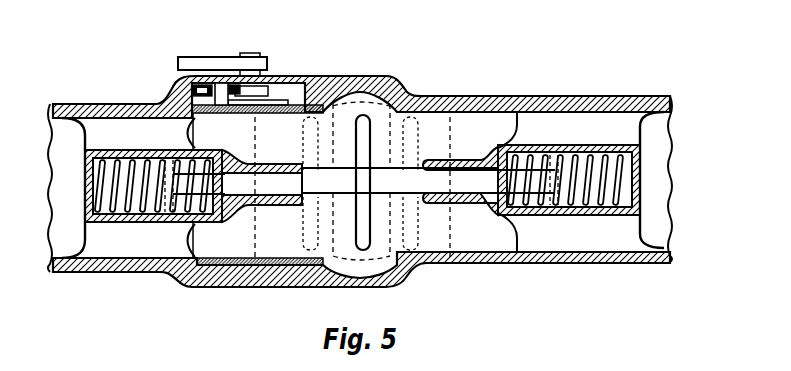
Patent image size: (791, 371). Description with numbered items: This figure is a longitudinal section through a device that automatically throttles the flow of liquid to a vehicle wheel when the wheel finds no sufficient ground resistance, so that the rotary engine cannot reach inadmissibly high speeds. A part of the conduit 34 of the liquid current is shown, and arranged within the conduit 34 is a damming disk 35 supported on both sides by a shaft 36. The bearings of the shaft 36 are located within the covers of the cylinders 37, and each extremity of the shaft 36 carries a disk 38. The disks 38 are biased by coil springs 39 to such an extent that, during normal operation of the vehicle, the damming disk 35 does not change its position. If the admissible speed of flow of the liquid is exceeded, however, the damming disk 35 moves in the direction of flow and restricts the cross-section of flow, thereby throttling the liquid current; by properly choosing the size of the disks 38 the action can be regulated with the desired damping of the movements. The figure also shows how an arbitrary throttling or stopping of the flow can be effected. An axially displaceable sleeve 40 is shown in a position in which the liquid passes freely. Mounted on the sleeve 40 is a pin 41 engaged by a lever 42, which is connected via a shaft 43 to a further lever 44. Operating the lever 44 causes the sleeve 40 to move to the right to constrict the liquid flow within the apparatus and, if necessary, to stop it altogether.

The conduit 34 is at (100, 112).
The damming disk 35 is at (362, 160).
The shaft 36 is at (393, 185).
The cylinder 37 is at (150, 152).
The disk 38 is at (361, 198).
The coil spring 39 is at (153, 202).
The axially displaceable sleeve 40 is at (280, 258).
The pin 41 is at (220, 88).
The lever 42 is at (193, 88).
The shaft 43 is at (252, 53).
The lever 44 is at (224, 62).